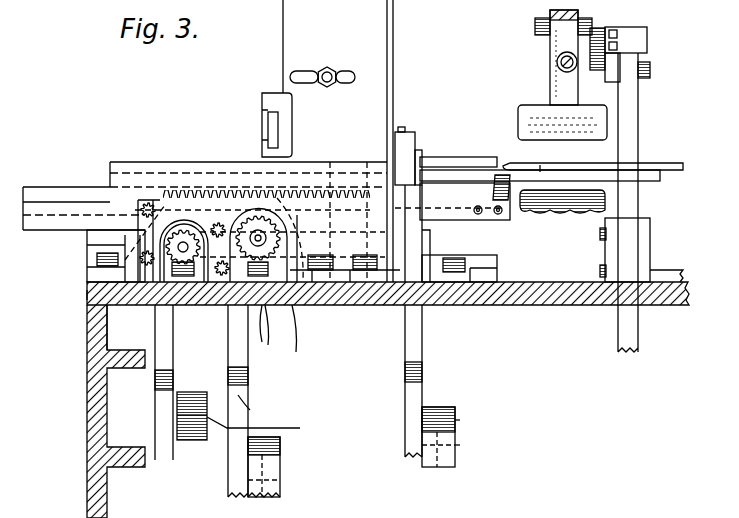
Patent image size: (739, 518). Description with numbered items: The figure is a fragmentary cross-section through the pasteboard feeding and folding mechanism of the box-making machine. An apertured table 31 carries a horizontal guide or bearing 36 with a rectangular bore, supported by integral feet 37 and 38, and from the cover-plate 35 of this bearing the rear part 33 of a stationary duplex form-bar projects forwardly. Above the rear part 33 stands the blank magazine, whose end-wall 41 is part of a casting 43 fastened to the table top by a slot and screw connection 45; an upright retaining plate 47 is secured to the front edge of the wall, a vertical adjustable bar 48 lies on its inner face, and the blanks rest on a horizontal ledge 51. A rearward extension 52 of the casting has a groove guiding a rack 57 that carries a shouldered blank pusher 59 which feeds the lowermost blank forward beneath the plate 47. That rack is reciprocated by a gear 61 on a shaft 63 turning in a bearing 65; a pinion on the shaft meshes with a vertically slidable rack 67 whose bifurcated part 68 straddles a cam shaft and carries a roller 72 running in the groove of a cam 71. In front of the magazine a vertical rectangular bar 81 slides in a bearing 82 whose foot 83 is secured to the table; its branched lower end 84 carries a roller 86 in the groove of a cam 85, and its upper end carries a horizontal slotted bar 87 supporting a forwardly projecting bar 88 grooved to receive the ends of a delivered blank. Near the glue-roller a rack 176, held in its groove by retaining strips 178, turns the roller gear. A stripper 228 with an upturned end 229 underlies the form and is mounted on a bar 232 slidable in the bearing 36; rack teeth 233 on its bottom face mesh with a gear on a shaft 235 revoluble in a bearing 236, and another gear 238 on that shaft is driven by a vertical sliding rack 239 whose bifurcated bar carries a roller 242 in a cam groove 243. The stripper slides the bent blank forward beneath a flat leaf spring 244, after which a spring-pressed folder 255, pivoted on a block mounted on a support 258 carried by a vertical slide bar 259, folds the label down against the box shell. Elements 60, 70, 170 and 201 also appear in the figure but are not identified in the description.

The table 31 is at (492, 297).
The rear part of form 33 is at (538, 158).
The cover-plate 35 is at (47, 195).
The guide or bearing 36 is at (80, 210).
The foot 37 is at (90, 250).
The foot 38 is at (429, 236).
The end-wall 41 is at (308, 46).
The casting 43 is at (349, 303).
The slot and screw connection 45 is at (310, 255).
The retaining strip or plate 47 is at (394, 58).
The adjustable bar 48 is at (340, 68).
The ledge 51 is at (350, 172).
The rearward extension 52 is at (178, 162).
The rack 57 is at (330, 198).
The blank pusher or feeder 59 is at (328, 163).
The link 60 is at (272, 323).
The gear 61 is at (312, 305).
The shaft 63 is at (266, 334).
The bearing 65 is at (303, 334).
The rack 67 is at (240, 348).
The bifurcated part 68 is at (252, 410).
The wire 70 is at (264, 426).
The cam 71 is at (283, 483).
The roller 72 is at (280, 447).
The bar 81 is at (412, 340).
The bearing 82 is at (455, 258).
The foot 83 is at (497, 276).
The branched lower end 84 is at (412, 385).
The cam 85 is at (455, 445).
The roller 86 is at (455, 422).
The slotted bar 87 is at (412, 143).
The horizontal bar 88 is at (452, 158).
The bracket 170 is at (275, 97).
The rack 176 is at (268, 128).
The retaining plate or strip 178 is at (262, 103).
The rod 201 is at (167, 462).
The stripper 228 is at (503, 197).
The upturned end 229 is at (493, 183).
The bar 232 is at (457, 210).
The rack teeth 233 is at (86, 279).
The shaft 235 is at (147, 305).
The bearing 236 is at (253, 280).
The gear 238 is at (87, 316).
The vertical sliding rack 239 is at (175, 305).
The roller 242 is at (195, 440).
The cam groove 243 is at (195, 443).
The flat leaf spring 244 is at (665, 162).
The spring-pressed folder 255 is at (550, 82).
The support 258 is at (600, 32).
The vertical slide bar 259 is at (640, 338).